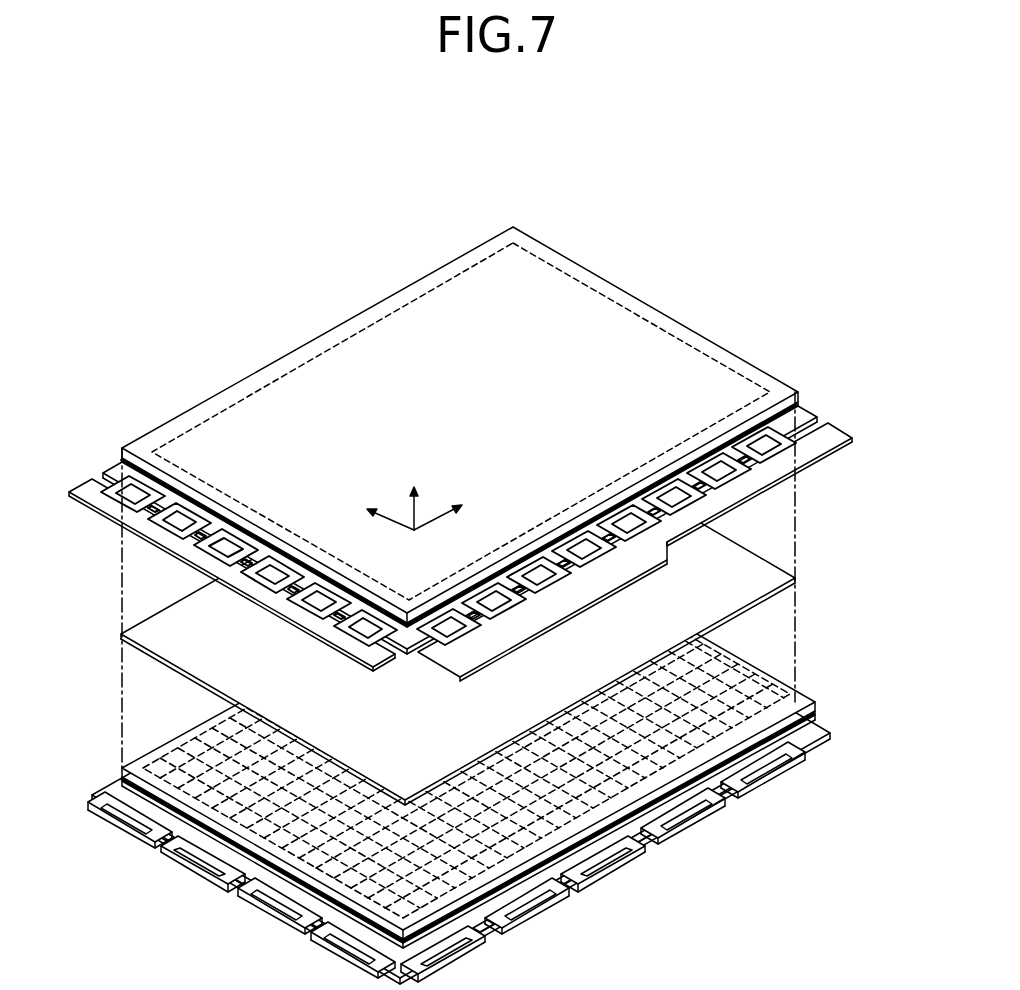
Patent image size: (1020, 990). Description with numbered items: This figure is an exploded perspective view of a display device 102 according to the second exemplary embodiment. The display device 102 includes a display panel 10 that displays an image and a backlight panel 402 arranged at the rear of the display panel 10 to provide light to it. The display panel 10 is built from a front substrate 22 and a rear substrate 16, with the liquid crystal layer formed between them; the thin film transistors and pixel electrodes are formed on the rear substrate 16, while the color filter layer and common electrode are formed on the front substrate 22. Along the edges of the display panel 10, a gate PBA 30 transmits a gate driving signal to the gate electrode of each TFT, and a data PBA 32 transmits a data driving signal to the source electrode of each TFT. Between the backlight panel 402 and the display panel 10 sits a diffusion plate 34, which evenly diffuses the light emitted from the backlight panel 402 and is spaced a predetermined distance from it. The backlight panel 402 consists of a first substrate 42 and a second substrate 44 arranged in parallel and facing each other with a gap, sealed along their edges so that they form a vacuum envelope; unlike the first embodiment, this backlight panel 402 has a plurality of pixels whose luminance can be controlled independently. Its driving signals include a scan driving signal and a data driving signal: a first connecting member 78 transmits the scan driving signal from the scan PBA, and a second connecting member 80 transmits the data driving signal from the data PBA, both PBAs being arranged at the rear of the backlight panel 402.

The display device 102 is at (393, 182).
The display panel 10 is at (460, 427).
The front substrate 22 is at (588, 308).
The rear substrate 16 is at (802, 413).
The data PBA 32 is at (832, 433).
The gate PBA 30 is at (85, 490).
The diffusion plate 34 is at (168, 620).
The backlight panel 402 is at (446, 744).
The second substrate 44 is at (768, 682).
The first substrate 42 is at (815, 727).
The first connecting member 78 is at (253, 896).
The second connecting member 80 is at (490, 930).